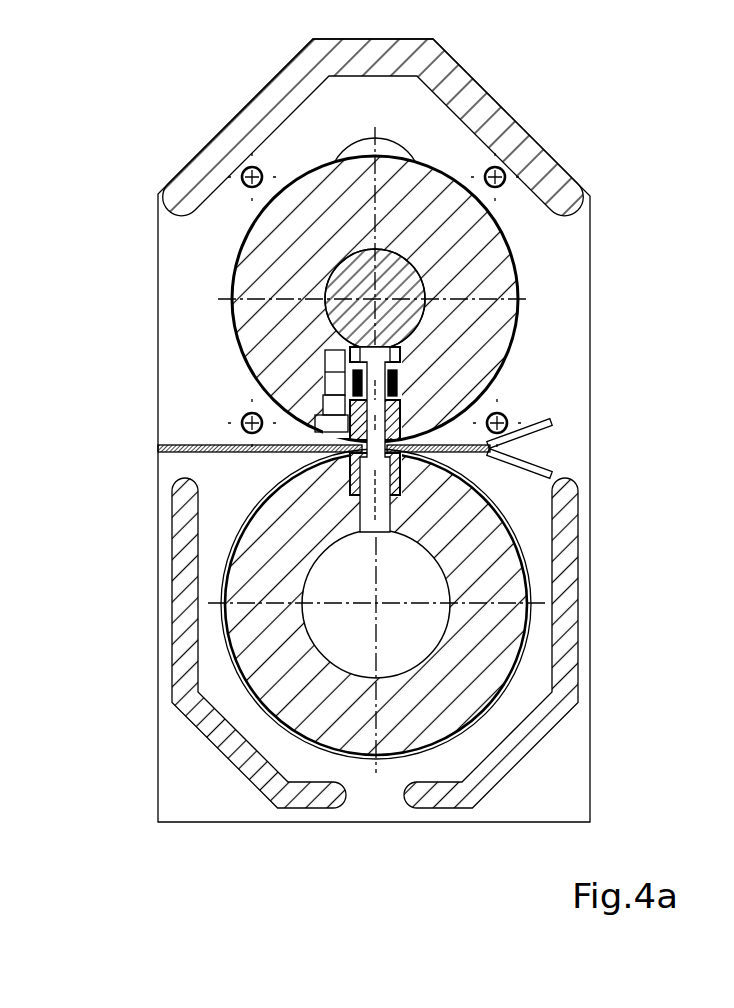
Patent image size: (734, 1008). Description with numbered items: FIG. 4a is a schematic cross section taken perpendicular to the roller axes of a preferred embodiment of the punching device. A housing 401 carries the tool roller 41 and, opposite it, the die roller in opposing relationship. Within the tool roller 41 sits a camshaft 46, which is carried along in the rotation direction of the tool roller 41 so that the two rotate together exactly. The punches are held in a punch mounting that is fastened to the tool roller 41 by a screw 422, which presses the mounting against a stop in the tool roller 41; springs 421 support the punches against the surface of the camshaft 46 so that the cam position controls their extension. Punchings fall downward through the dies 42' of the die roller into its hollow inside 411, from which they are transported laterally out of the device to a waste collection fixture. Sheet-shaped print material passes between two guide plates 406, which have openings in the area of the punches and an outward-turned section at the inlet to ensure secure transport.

The housing 401 is at (522, 138).
The tool roller 41 is at (270, 272).
The camshaft 46 is at (397, 285).
The screw 422 is at (337, 395).
The springs 421 is at (470, 388).
The guide plates 406 is at (550, 468).
The dies 42' is at (511, 473).
The inside of die roller 411 is at (323, 583).